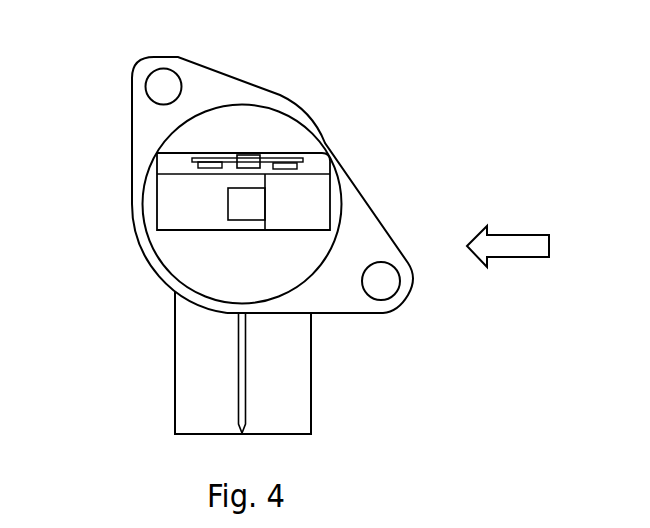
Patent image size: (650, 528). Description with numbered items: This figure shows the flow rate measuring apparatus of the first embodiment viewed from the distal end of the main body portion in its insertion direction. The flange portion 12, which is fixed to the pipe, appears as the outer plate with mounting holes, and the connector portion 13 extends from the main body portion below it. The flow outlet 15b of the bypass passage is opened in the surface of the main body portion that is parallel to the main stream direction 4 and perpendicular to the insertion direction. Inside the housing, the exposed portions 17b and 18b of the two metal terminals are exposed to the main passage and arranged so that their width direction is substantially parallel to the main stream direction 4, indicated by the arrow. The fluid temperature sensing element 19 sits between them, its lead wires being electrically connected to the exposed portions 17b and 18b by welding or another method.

The main stream direction 4 is at (518, 232).
The flange portion 12 is at (362, 315).
The connector portion 13 is at (175, 370).
The flow outlet 15b is at (245, 200).
The exposed portion 17b is at (200, 166).
The exposed portion 18b is at (300, 159).
The fluid temperature sensing element 19 is at (250, 153).